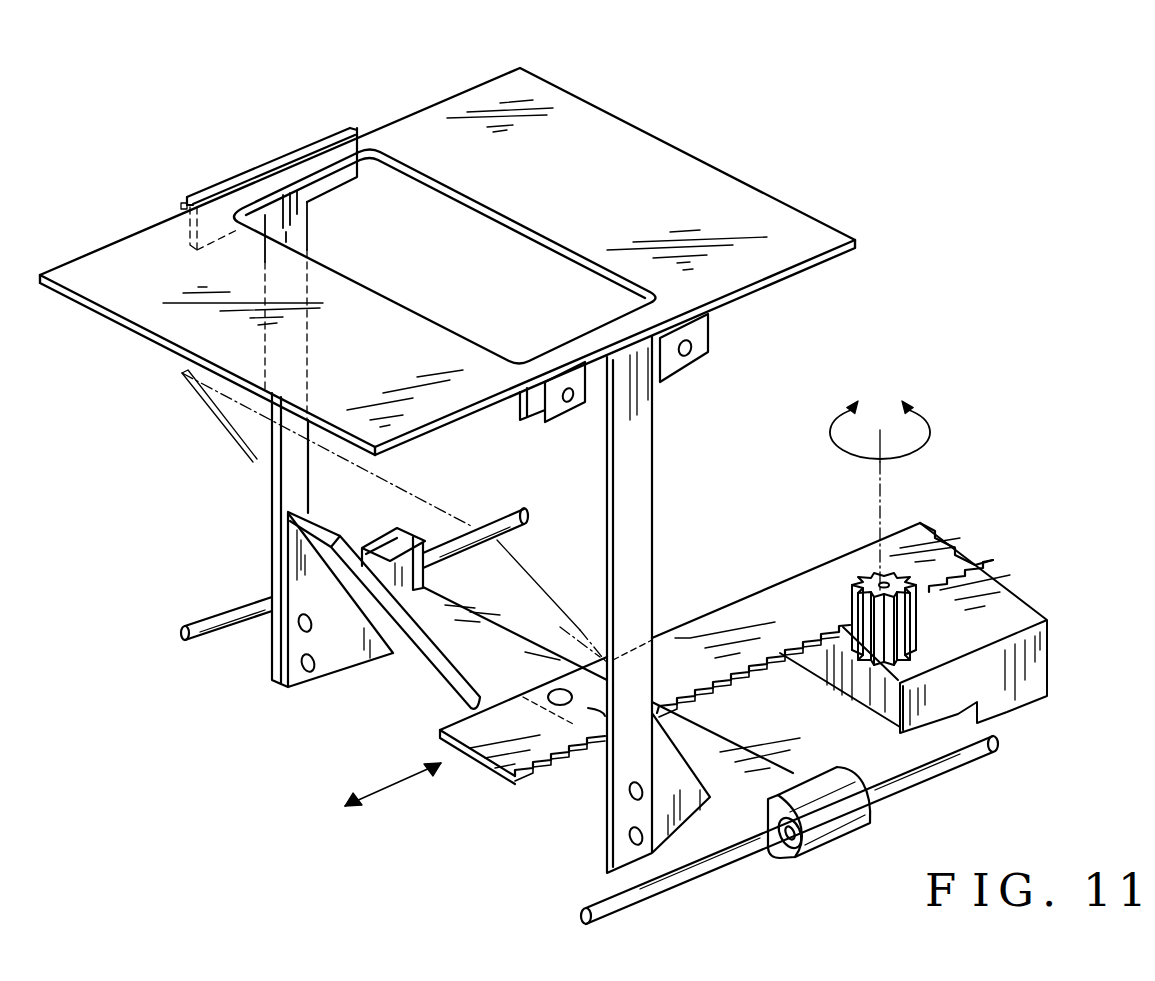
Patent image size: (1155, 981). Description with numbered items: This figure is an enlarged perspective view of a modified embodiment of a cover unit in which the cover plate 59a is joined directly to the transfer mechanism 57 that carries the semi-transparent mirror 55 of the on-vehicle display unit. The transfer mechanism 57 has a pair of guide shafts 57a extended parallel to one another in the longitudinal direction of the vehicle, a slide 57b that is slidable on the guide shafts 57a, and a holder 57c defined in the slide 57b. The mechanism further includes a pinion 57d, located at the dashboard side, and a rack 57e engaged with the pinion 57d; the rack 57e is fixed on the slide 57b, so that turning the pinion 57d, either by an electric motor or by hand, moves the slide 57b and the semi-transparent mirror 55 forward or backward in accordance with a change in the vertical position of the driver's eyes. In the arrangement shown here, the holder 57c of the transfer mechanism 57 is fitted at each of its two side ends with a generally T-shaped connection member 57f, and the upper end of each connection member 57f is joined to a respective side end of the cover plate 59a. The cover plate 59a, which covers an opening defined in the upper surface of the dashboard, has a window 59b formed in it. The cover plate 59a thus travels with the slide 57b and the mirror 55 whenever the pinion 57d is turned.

The semi-transparent mirror 55 is at (348, 425).
The mirror transfer mechanism 57 is at (782, 482).
The guide shaft 57a is at (505, 510).
The slide 57b is at (475, 638).
The holder 57c is at (670, 805).
The pinion 57d is at (920, 617).
The rack 57e is at (745, 613).
The connection member 57f is at (287, 452).
The cover plate 59a is at (450, 190).
The window 59b is at (269, 274).